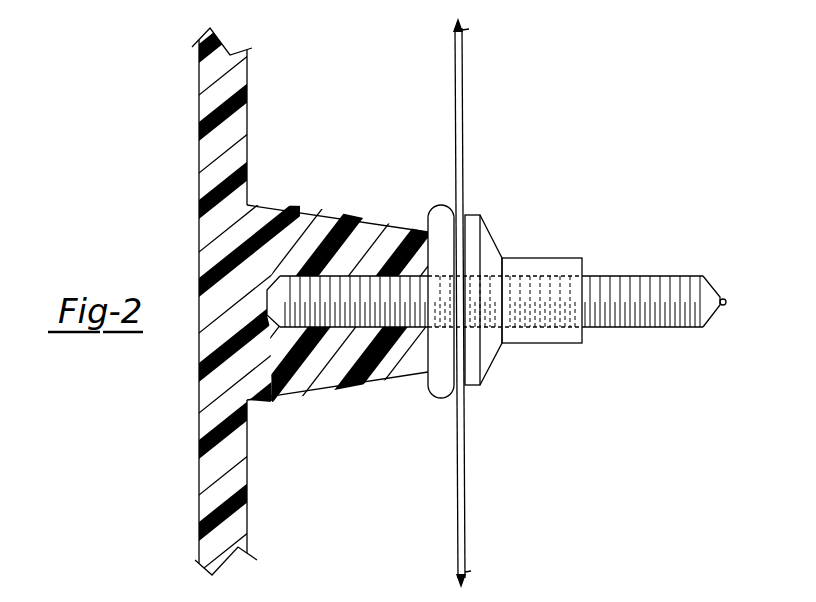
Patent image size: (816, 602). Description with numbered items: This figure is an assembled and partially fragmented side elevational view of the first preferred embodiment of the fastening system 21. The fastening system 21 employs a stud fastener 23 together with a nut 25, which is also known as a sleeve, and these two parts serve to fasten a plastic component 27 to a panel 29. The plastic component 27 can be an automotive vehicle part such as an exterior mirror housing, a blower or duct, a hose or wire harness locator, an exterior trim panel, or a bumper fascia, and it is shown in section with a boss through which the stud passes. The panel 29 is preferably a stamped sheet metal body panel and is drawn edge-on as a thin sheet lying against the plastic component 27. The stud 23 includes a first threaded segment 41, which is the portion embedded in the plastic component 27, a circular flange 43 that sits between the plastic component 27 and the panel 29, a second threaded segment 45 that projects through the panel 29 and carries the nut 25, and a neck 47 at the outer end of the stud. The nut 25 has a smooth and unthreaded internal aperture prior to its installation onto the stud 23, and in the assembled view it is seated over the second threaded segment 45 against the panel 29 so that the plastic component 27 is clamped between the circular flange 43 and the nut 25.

The fastening system 21 is at (648, 110).
The stud fastener 23 is at (501, 271).
The nut 25 is at (537, 258).
The plastic component 27 is at (237, 73).
The panel 29 is at (463, 481).
The first threaded segment 41 is at (343, 286).
The circular flange 43 is at (438, 224).
The second threaded segment 45 is at (619, 282).
The neck 47 is at (723, 296).